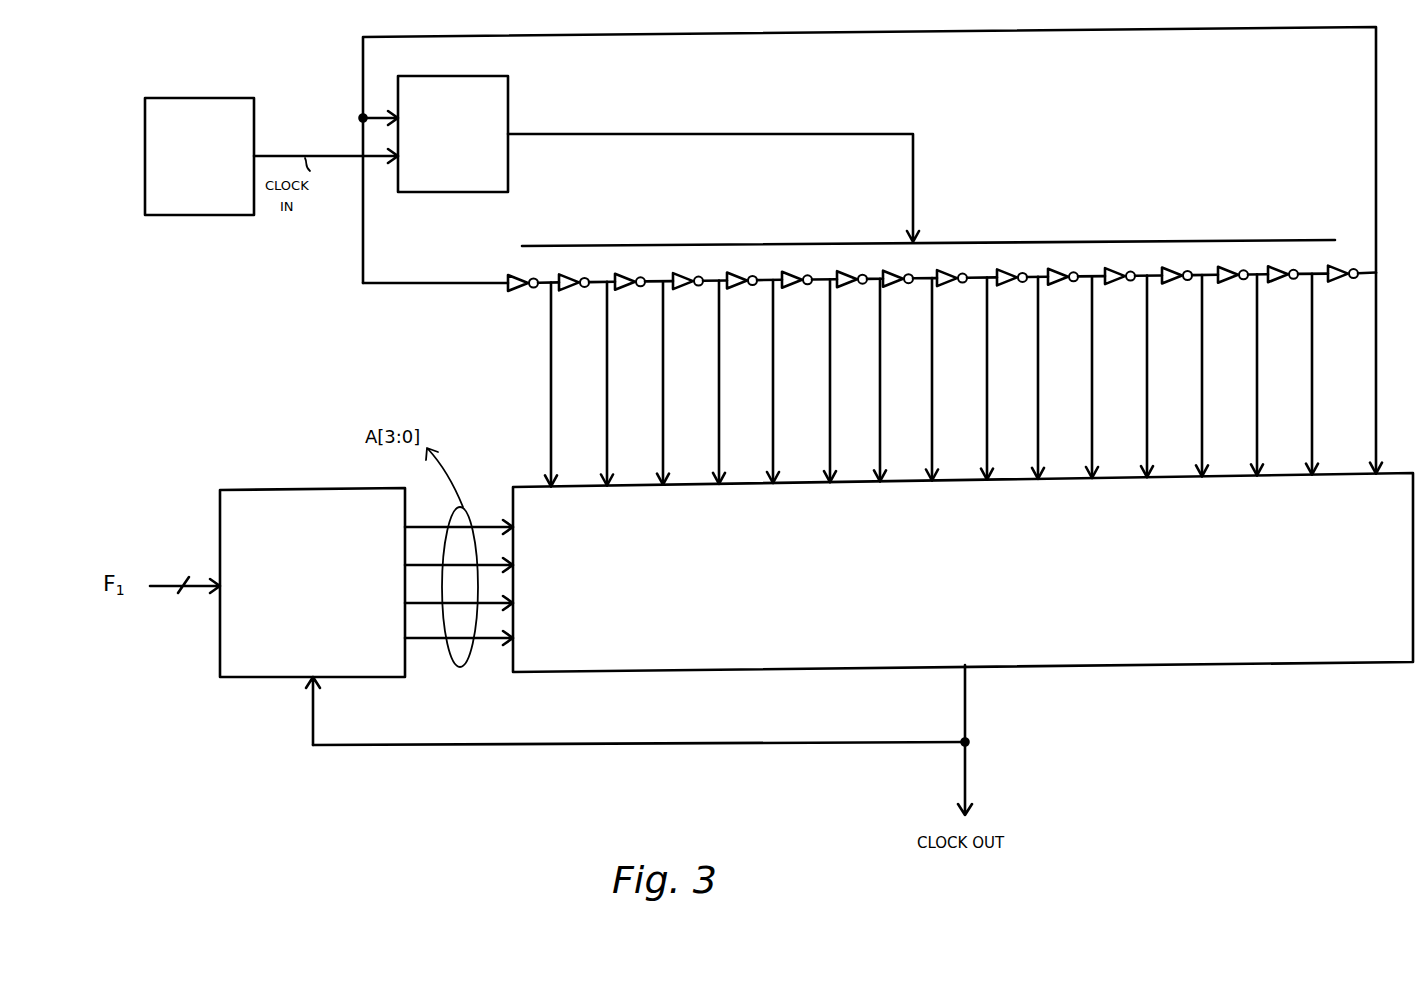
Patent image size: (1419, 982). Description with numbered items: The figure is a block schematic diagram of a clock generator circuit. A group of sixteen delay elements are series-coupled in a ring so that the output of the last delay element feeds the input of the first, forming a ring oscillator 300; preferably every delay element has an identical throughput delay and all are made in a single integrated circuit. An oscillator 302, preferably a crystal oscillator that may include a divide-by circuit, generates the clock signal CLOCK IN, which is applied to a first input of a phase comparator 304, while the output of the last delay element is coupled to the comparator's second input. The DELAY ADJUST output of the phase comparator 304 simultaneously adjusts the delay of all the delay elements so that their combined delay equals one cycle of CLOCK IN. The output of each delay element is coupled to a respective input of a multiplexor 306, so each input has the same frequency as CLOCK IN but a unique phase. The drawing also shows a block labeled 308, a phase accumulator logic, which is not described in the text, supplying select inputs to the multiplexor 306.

The ring oscillator 300 is at (1040, 32).
The oscillator 302 is at (240, 206).
The phase comparator 304 is at (492, 185).
The multiplexor 306 is at (1363, 632).
The phase accumulator logic 308 is at (378, 657).